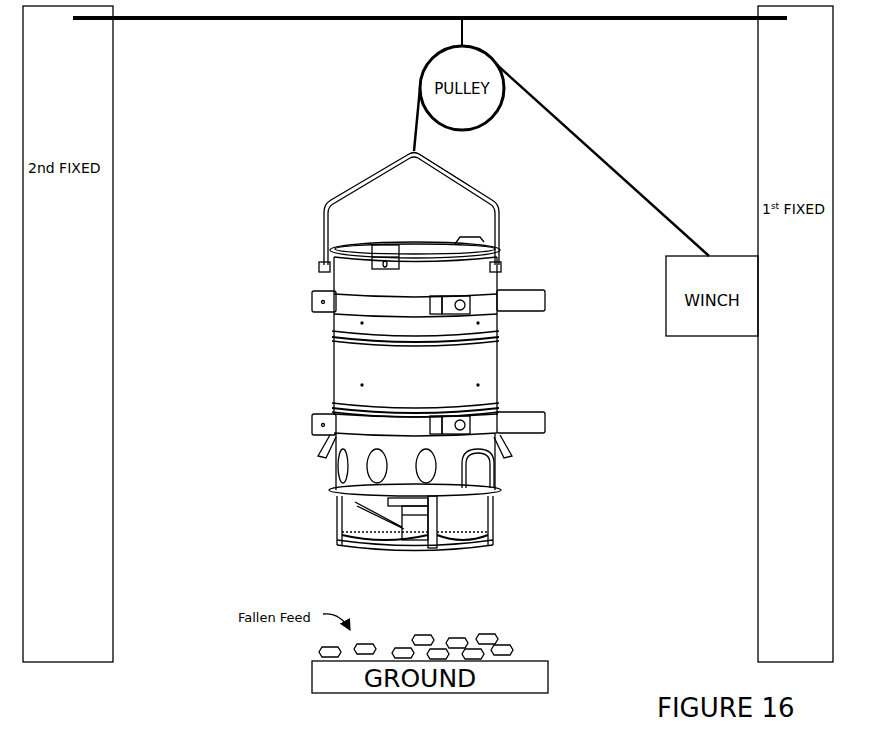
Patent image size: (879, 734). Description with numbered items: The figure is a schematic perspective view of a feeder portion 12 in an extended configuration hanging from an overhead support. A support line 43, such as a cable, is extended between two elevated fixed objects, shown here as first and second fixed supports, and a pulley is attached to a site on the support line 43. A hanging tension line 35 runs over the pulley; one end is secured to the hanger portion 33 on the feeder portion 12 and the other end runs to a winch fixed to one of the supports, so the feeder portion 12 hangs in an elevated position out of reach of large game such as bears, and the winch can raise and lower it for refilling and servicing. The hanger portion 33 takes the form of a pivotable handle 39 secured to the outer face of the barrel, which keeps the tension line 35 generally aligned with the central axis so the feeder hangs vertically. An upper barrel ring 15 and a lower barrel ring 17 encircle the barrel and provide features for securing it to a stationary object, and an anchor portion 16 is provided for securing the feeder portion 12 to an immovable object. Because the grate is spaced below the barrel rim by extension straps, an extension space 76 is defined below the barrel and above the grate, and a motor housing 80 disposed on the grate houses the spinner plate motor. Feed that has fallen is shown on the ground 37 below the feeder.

The feeder portion 12 is at (415, 408).
The upper barrel ring 15 is at (360, 299).
The anchor portion 16 is at (556, 421).
The lower barrel ring 17 is at (354, 427).
The hanger portion 33 is at (344, 160).
The hanging tension line 35 is at (412, 128).
The ground 37 is at (193, 730).
The pivotable handle 39 is at (468, 176).
The support line 43 is at (266, 22).
The extension space 76 is at (445, 534).
The motor housing 80 is at (406, 528).